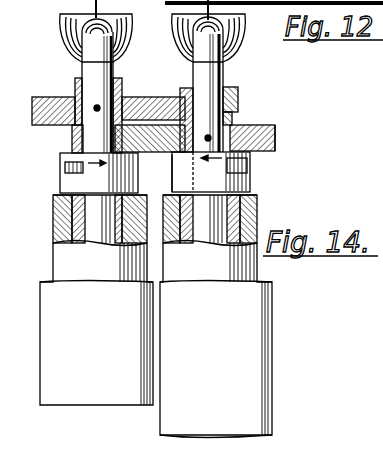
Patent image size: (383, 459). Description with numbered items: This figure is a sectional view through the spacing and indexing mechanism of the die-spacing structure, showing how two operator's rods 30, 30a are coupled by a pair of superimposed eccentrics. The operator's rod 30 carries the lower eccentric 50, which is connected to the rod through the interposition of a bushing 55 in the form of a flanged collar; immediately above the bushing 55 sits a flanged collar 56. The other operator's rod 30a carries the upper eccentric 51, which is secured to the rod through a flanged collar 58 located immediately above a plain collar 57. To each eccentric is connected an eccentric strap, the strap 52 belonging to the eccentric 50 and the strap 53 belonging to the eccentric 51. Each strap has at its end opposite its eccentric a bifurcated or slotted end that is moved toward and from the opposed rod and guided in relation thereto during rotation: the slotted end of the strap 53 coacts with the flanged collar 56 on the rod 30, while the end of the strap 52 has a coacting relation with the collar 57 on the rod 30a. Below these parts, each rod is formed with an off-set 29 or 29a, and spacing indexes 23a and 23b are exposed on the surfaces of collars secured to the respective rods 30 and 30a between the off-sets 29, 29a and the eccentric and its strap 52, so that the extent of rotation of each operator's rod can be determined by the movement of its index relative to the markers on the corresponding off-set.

The spacing index 23a is at (236, 173).
The spacing index 23b is at (60, 182).
The off-set 29 is at (216, 316).
The off-set 29a is at (96, 300).
The operator's rod 30 is at (212, 76).
The operator's rod 30a is at (97, 90).
The eccentric 50 is at (257, 125).
The eccentric 51 is at (72, 126).
The eccentric strap 52 is at (275, 133).
The eccentric strap 53 is at (42, 100).
The bushing 55 is at (192, 156).
The flanged collar 56 is at (183, 88).
The collar 57 is at (155, 163).
The flanged collar 58 is at (115, 82).